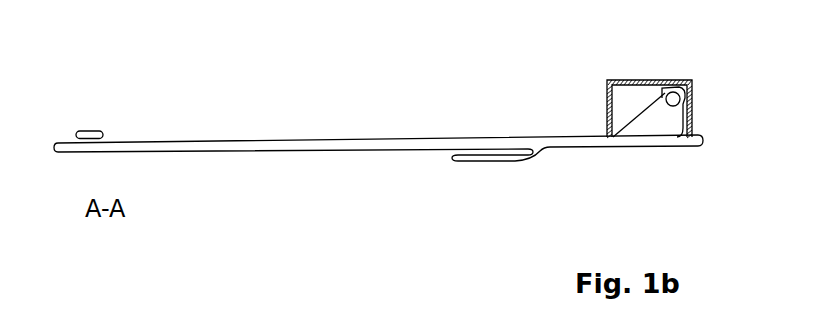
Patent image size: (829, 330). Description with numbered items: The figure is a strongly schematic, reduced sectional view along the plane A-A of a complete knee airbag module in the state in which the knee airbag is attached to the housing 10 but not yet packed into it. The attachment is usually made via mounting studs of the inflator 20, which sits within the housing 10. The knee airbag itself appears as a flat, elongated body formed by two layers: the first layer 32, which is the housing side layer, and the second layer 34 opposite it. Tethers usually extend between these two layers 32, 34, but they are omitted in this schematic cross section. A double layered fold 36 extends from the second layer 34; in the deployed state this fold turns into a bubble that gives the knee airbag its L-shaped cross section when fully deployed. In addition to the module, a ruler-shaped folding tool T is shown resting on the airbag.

The housing 10 is at (627, 82).
The inflator 20 is at (680, 102).
The first layer 32 is at (313, 141).
The second layer 34 is at (255, 150).
The double layered fold 36 is at (501, 158).
The ruler-shaped folding tool T is at (88, 134).